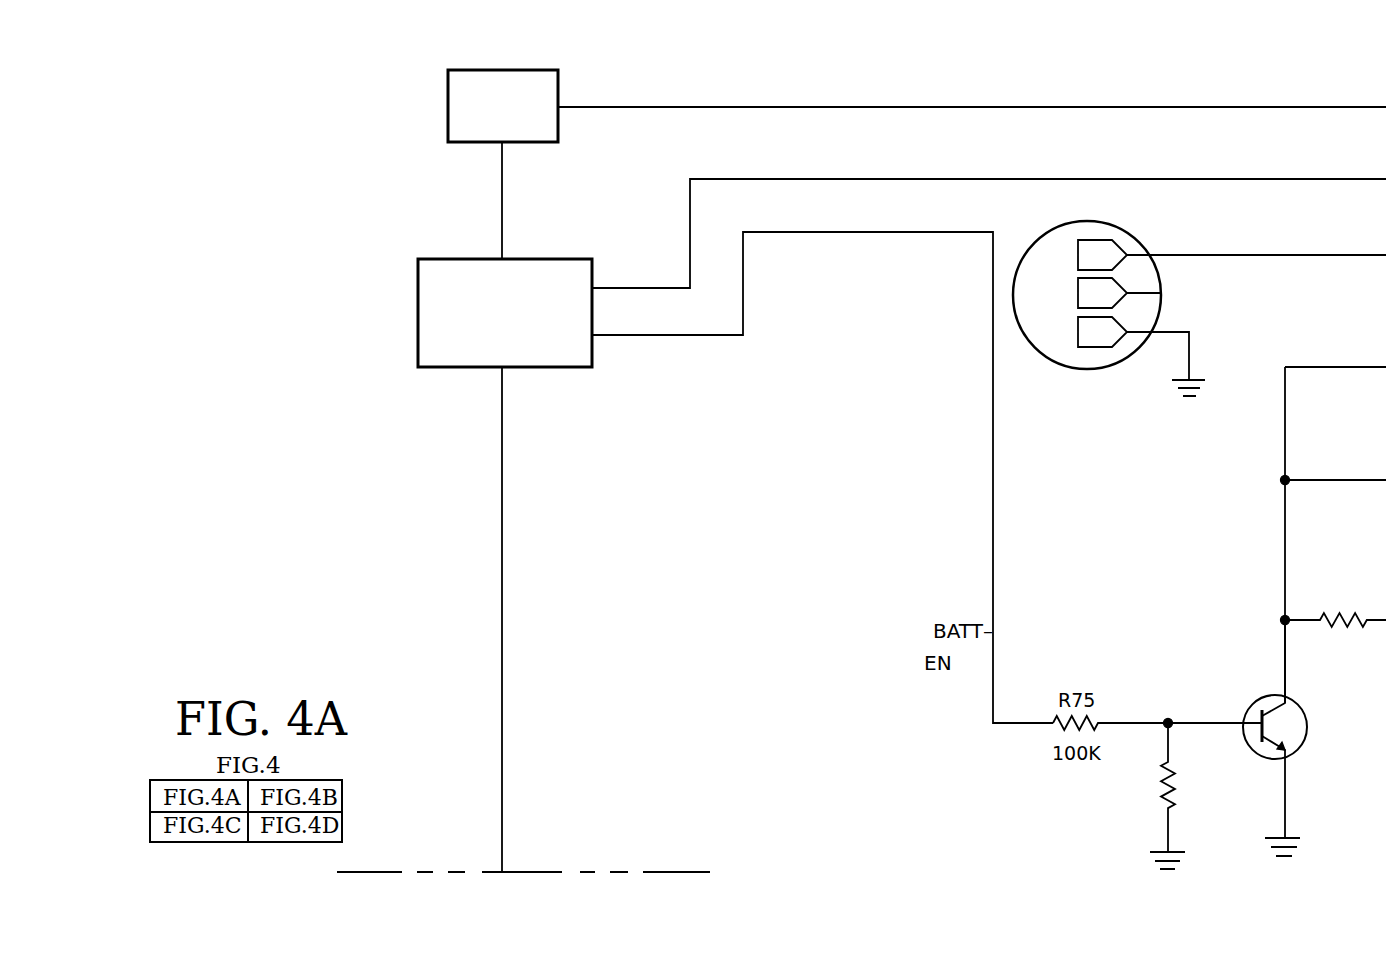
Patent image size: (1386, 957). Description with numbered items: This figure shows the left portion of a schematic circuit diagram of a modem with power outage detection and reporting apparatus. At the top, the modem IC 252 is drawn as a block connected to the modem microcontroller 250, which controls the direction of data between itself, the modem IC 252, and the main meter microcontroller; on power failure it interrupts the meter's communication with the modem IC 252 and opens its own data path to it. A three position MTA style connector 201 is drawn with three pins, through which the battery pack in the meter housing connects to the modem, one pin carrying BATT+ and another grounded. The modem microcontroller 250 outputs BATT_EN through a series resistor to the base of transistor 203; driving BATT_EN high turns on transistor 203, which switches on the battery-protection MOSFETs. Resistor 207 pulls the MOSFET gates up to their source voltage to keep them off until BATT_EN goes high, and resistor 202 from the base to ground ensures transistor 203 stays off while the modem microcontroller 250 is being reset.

The modem IC 252 is at (558, 87).
The modem microcontroller 250 is at (533, 259).
The three position MTA style connector 201 is at (1199, 313).
The resistor 207 is at (1335, 602).
The transistor 203 is at (1264, 738).
The resistor 202 is at (1193, 796).